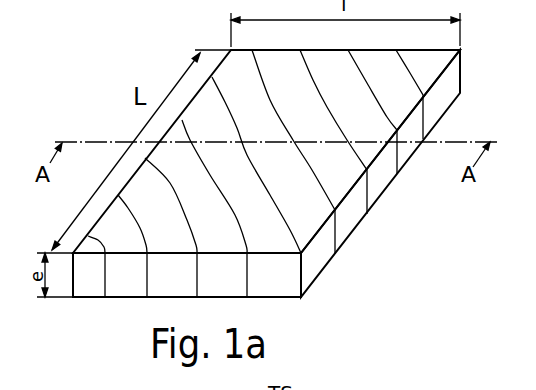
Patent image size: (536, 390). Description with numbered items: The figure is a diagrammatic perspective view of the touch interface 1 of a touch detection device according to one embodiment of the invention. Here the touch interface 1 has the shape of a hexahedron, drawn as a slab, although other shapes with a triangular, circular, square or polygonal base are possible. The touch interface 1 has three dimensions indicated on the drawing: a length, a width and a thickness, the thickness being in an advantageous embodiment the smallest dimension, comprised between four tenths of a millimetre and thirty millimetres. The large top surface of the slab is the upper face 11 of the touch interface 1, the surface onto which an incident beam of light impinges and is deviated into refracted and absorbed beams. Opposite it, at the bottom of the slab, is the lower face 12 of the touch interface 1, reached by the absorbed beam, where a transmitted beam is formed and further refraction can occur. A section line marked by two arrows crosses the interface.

The touch interface 1 is at (266, 209).
The upper face 11 is at (340, 167).
The lower face 12 is at (288, 300).